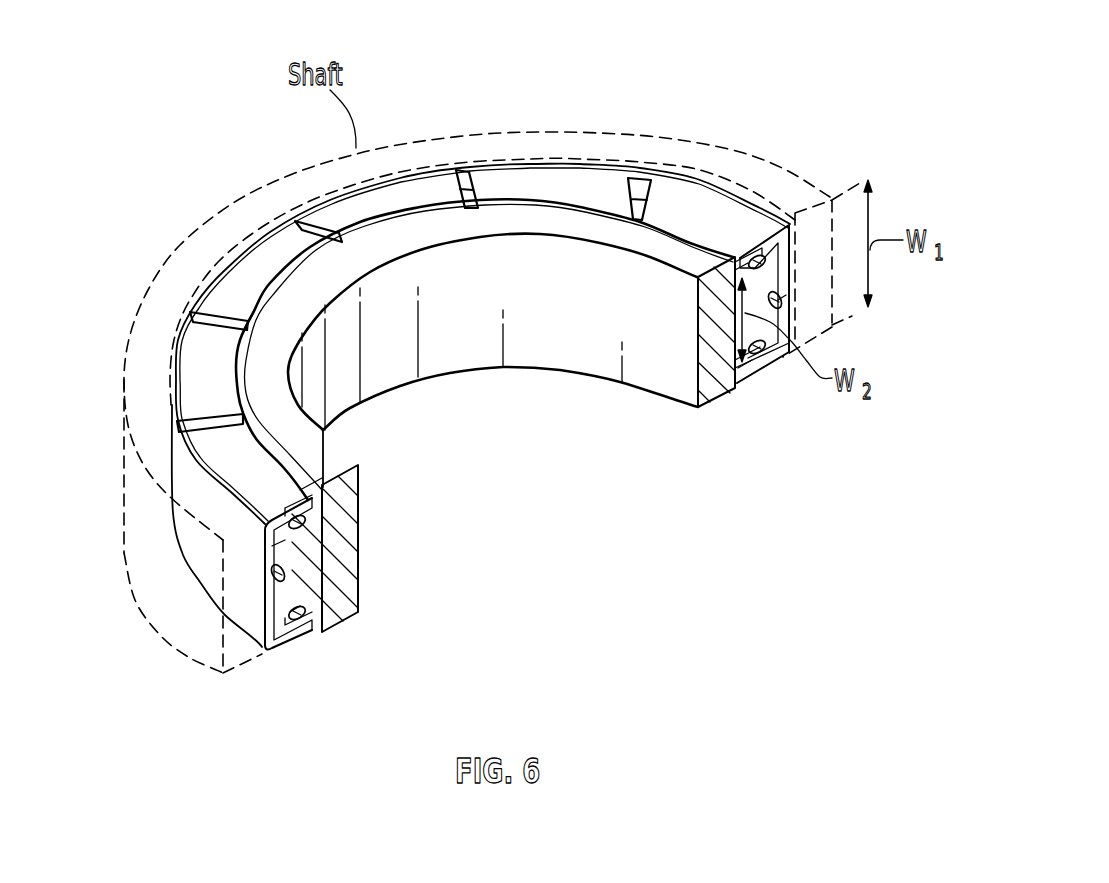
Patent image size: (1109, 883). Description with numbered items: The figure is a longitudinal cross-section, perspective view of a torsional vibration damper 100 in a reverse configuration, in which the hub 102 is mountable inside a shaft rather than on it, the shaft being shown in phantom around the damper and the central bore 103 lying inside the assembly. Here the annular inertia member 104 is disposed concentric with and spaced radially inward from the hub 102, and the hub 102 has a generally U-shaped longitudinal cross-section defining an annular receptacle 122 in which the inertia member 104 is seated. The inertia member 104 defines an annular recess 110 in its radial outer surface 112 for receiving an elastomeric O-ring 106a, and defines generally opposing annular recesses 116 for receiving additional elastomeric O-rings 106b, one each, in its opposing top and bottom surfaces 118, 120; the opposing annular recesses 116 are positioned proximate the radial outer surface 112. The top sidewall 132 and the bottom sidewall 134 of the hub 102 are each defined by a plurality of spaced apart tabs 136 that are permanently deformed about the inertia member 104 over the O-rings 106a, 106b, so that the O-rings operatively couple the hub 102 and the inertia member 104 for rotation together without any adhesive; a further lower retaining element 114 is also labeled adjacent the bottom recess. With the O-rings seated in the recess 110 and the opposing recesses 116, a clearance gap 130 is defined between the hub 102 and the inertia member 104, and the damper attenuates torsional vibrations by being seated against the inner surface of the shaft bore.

The torsional vibration damper 100 is at (742, 106).
The hub 102 is at (262, 262).
The central bore 103 is at (645, 366).
The inertia member 104 is at (586, 226).
The elastomeric O-ring 106a is at (778, 300).
The elastomeric O-rings 106b is at (458, 170).
The annular recess 110 is at (292, 570).
The radial outer surface 112 is at (443, 332).
The lower retainer 114 is at (272, 614).
The opposing annular recesses 116 is at (305, 515).
The top surface 118 is at (285, 486).
The bottom surface 120 is at (290, 612).
The annular receptacle 122 is at (278, 553).
The clearance gap 130 is at (795, 271).
The top sidewall 132 is at (207, 352).
The bottom sidewall 134 is at (477, 380).
The spaced apart tabs 136 is at (513, 182).